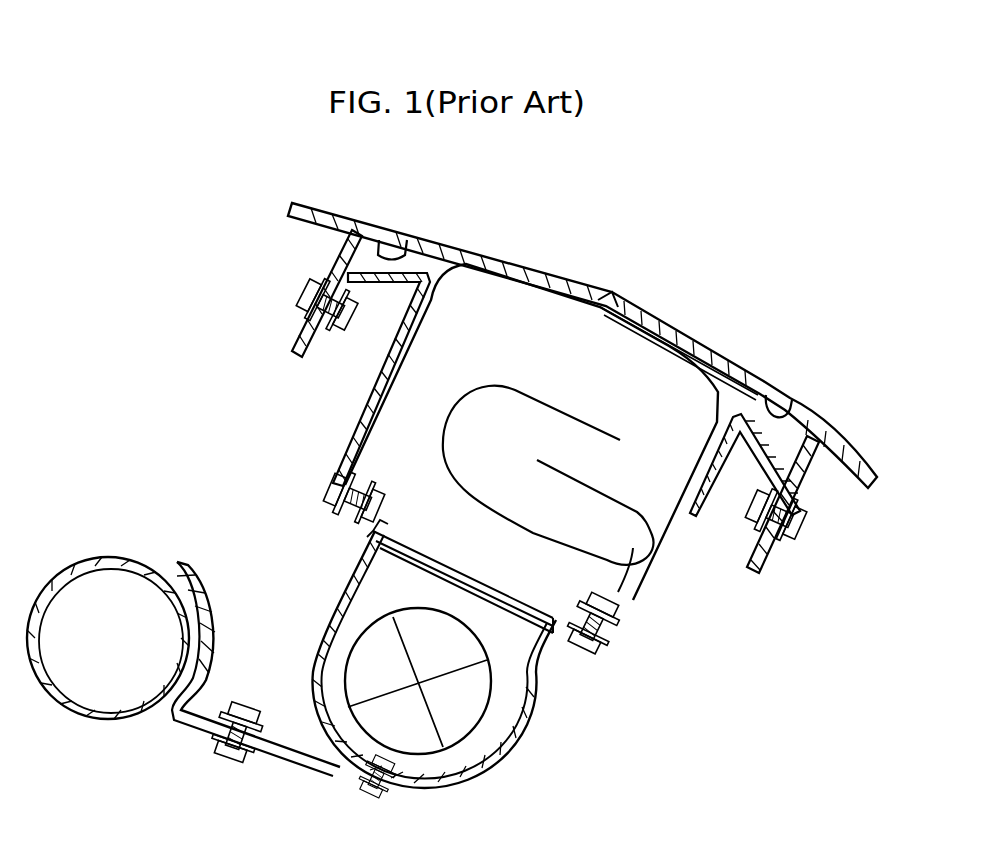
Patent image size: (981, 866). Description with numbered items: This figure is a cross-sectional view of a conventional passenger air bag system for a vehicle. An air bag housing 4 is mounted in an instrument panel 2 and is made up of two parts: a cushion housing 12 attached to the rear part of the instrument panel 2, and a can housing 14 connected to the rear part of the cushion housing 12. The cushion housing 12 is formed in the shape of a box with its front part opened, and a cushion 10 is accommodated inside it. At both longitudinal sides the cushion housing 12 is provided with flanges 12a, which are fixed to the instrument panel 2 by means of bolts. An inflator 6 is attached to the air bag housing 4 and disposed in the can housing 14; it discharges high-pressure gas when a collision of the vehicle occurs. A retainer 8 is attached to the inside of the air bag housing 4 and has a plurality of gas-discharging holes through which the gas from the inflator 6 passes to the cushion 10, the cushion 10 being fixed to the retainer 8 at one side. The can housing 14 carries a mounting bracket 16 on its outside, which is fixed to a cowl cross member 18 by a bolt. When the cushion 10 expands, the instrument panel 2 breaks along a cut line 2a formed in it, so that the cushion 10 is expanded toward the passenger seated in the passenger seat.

The instrument panel 2 is at (445, 243).
The cut line 2a is at (607, 292).
The air bag housing 4 is at (197, 493).
The inflator 6 is at (460, 710).
The retainer 8 is at (637, 621).
The cushion 10 is at (686, 380).
The cushion housing 12 is at (338, 470).
The flange 12a is at (797, 488).
The can housing 14 is at (340, 597).
The mounting bracket 16 is at (334, 767).
The cowl cross member 18 is at (124, 714).